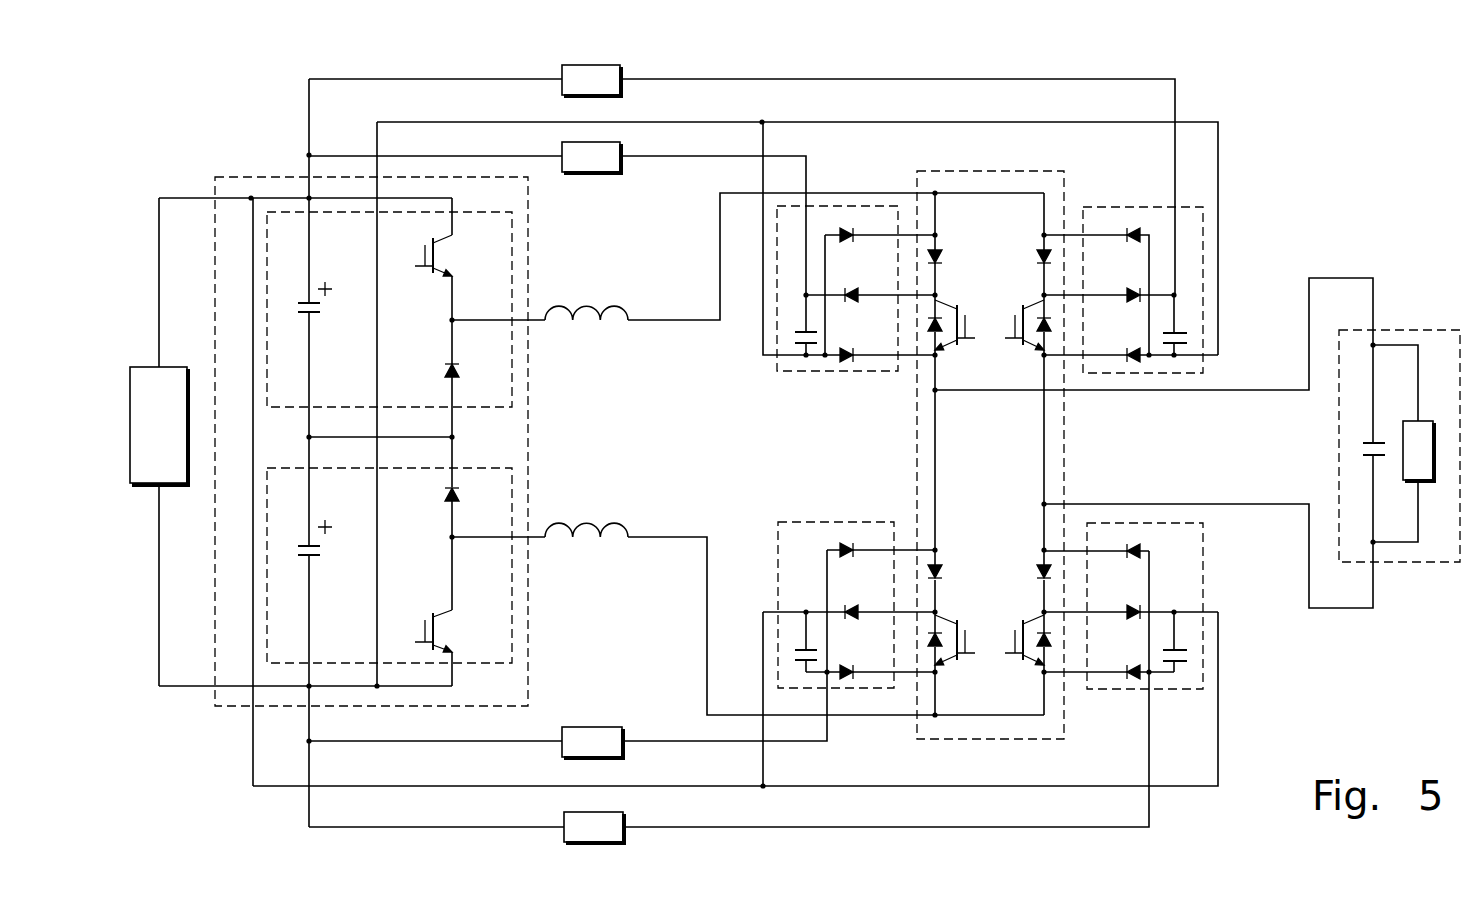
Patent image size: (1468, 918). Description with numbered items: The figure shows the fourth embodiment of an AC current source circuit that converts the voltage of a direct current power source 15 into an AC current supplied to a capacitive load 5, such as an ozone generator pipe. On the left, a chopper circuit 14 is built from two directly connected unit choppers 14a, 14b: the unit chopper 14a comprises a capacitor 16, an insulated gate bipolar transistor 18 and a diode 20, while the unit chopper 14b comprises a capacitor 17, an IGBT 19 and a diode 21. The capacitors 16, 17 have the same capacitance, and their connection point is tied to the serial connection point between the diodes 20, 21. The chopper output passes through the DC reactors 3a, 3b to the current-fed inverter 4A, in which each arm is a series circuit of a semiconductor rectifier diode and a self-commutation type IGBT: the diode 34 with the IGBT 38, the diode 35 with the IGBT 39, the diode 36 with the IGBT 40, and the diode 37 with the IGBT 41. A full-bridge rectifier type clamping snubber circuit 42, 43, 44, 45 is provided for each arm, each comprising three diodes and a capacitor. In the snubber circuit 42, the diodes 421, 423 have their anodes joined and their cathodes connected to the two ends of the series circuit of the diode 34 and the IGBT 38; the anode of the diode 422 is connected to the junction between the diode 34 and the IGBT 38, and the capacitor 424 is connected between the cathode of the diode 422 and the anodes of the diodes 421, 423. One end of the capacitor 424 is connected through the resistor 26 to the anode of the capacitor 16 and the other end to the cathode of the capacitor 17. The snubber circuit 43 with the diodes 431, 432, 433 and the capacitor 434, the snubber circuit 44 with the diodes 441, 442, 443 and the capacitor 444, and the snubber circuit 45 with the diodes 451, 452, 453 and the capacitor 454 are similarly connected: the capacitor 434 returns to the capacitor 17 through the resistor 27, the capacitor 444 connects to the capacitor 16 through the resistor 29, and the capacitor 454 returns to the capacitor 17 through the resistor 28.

The DC reactor 3a is at (584, 305).
The DC reactor 3b is at (585, 540).
The current-fed inverter 4A is at (962, 170).
The capacitive load 5 is at (1397, 330).
The chopper circuit 14 is at (530, 416).
The unit chopper 14a is at (513, 366).
The unit chopper 14b is at (513, 507).
The direct current power source 15 is at (146, 439).
The capacitor 16 is at (306, 302).
The capacitor 17 is at (306, 547).
The insulated gate bipolar transistor 18 is at (455, 252).
The insulated gate bipolar transistor 19 is at (453, 628).
The diode 20 is at (443, 375).
The diode 21 is at (444, 498).
The resistor 26 is at (578, 172).
The resistor 27 is at (575, 727).
The resistor 28 is at (625, 815).
The resistor 29 is at (605, 65).
The diode 34 is at (945, 257).
The diode 35 is at (942, 576).
The diode 36 is at (1040, 256).
The diode 37 is at (1038, 574).
The IGBT 38 is at (975, 340).
The IGBT 39 is at (975, 655).
The IGBT 40 is at (1005, 340).
The IGBT 41 is at (1005, 655).
The clamping snubber circuit 42 is at (808, 372).
The clamping snubber circuit 43 is at (808, 522).
The clamping snubber circuit 44 is at (1148, 206).
The clamping snubber circuit 45 is at (1206, 590).
The diode 421 is at (843, 240).
The diode 422 is at (858, 298).
The diode 423 is at (845, 362).
The capacitor 424 is at (798, 332).
The diode 431 is at (843, 553).
The diode 432 is at (858, 615).
The diode 433 is at (846, 677).
The capacitor 434 is at (798, 650).
The diode 441 is at (1135, 240).
The diode 442 is at (1125, 298).
The diode 443 is at (1135, 360).
The capacitor 444 is at (1187, 332).
The diode 451 is at (1135, 556).
The diode 452 is at (1125, 615).
The diode 453 is at (1135, 678).
The capacitor 454 is at (1187, 640).